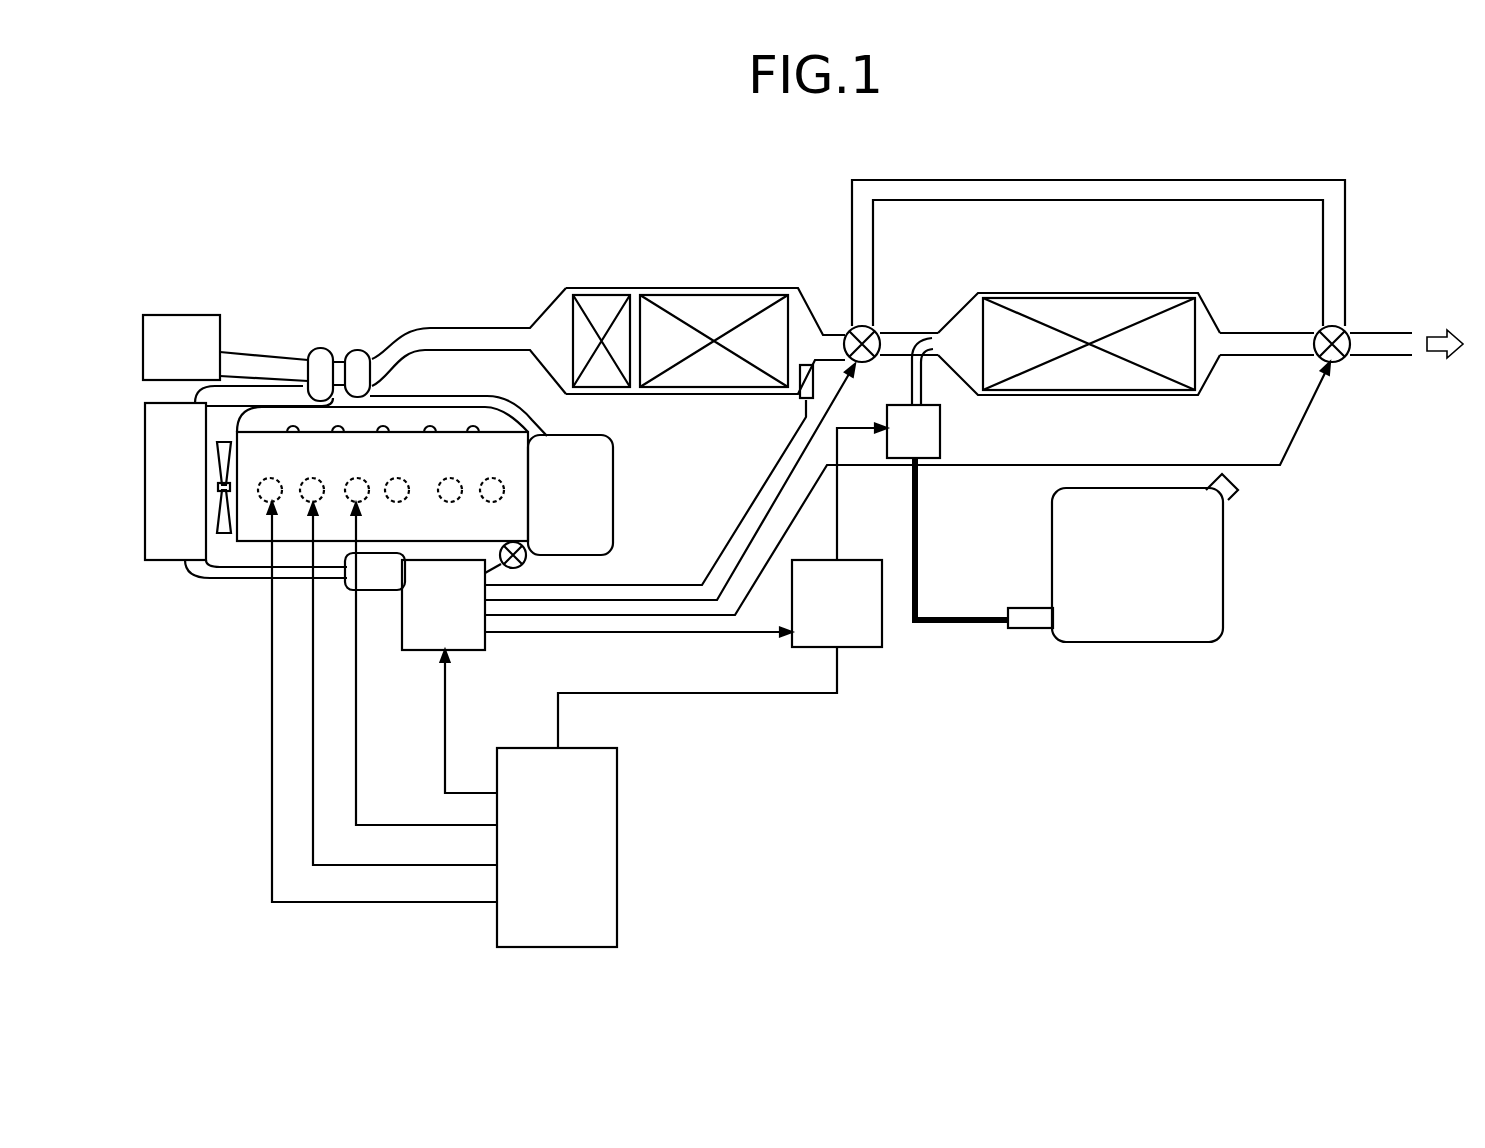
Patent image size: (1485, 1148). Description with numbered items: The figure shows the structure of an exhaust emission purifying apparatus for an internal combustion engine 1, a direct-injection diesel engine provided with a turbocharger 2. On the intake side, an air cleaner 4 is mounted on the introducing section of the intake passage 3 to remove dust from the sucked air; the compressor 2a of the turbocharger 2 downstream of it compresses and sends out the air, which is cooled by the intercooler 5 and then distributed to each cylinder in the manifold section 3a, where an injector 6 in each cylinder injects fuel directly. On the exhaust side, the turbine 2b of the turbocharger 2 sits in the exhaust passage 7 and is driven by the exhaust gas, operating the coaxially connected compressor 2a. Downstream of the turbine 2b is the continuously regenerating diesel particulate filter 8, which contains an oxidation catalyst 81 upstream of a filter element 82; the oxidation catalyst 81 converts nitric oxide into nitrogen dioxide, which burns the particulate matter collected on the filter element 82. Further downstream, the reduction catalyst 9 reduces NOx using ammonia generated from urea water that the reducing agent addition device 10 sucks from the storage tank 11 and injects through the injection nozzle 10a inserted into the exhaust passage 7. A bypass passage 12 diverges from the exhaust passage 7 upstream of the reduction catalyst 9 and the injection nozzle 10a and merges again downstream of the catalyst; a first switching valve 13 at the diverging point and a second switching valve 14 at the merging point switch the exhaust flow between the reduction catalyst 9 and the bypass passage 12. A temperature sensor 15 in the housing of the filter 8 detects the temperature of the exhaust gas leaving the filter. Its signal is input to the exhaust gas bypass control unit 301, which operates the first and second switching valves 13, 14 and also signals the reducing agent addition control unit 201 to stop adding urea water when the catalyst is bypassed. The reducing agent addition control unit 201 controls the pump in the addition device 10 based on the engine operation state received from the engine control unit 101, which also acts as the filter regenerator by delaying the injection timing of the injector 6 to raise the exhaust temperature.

The internal combustion engine 1 is at (263, 260).
The turbocharger 2 is at (319, 335).
The compressor 2a is at (303, 347).
The turbine 2b is at (357, 348).
The intake passage 3 is at (192, 573).
The manifold section 3a is at (323, 552).
The air cleaner 4 is at (165, 315).
The intercooler 5 is at (144, 433).
The injector 6 is at (260, 502).
The exhaust passage 7 is at (490, 327).
The diesel particulate filter 8 is at (705, 307).
The oxidation catalyst 81 is at (591, 293).
The filter element 82 is at (720, 293).
The reduction catalyst 9 is at (1103, 293).
The reducing agent addition device 10 is at (942, 450).
The injection nozzle 10a is at (923, 383).
The storage tank 11 is at (1138, 642).
The bypass passage 12 is at (1170, 180).
The first switching valve 13 is at (844, 330).
The second switching valve 14 is at (1345, 332).
The temperature sensor 15 is at (799, 400).
The engine control unit 101 is at (617, 773).
The reducing agent addition control unit 201 is at (862, 647).
The exhaust gas bypass control unit 301 is at (457, 650).